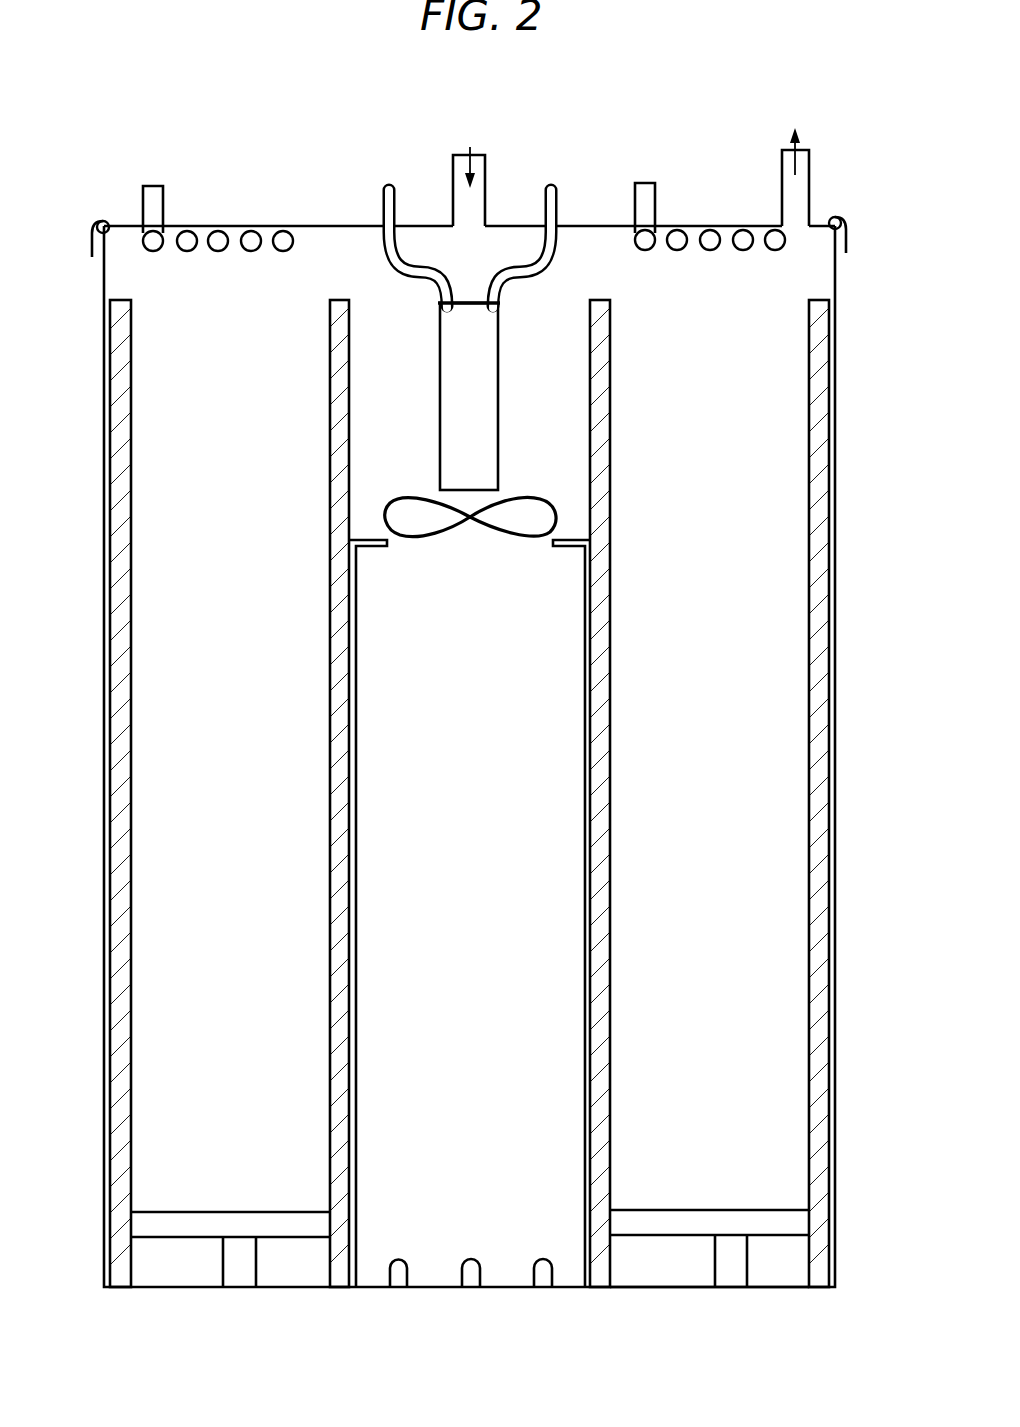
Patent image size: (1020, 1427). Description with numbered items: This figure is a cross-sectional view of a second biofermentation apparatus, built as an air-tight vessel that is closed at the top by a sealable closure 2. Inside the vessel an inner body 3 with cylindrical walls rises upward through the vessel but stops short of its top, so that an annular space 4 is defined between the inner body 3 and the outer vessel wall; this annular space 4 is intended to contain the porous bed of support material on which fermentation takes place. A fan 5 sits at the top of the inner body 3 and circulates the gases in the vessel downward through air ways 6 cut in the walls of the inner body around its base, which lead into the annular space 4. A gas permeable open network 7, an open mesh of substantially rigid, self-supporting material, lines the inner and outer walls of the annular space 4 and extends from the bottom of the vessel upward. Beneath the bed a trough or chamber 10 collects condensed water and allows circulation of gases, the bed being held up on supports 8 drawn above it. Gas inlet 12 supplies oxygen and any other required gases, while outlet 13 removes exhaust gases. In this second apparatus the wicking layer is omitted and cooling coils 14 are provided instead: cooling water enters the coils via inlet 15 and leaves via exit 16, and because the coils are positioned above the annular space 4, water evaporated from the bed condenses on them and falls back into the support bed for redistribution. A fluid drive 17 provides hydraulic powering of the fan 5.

The sealable closure 2 is at (848, 240).
The inner body 3 is at (492, 741).
The annular space 4 is at (713, 585).
The fan 5 is at (423, 535).
The air ways 6 is at (480, 1260).
The gas permeable open network 7 is at (820, 987).
The support 8 is at (732, 1245).
The trough or chamber 10 is at (772, 1265).
The gas inlet 12 is at (469, 172).
The outlet 13 is at (797, 165).
The cooling coils 14 is at (187, 232).
The inlet 15 is at (153, 186).
The exit 16 is at (645, 183).
The fluid drive 17 is at (383, 183).